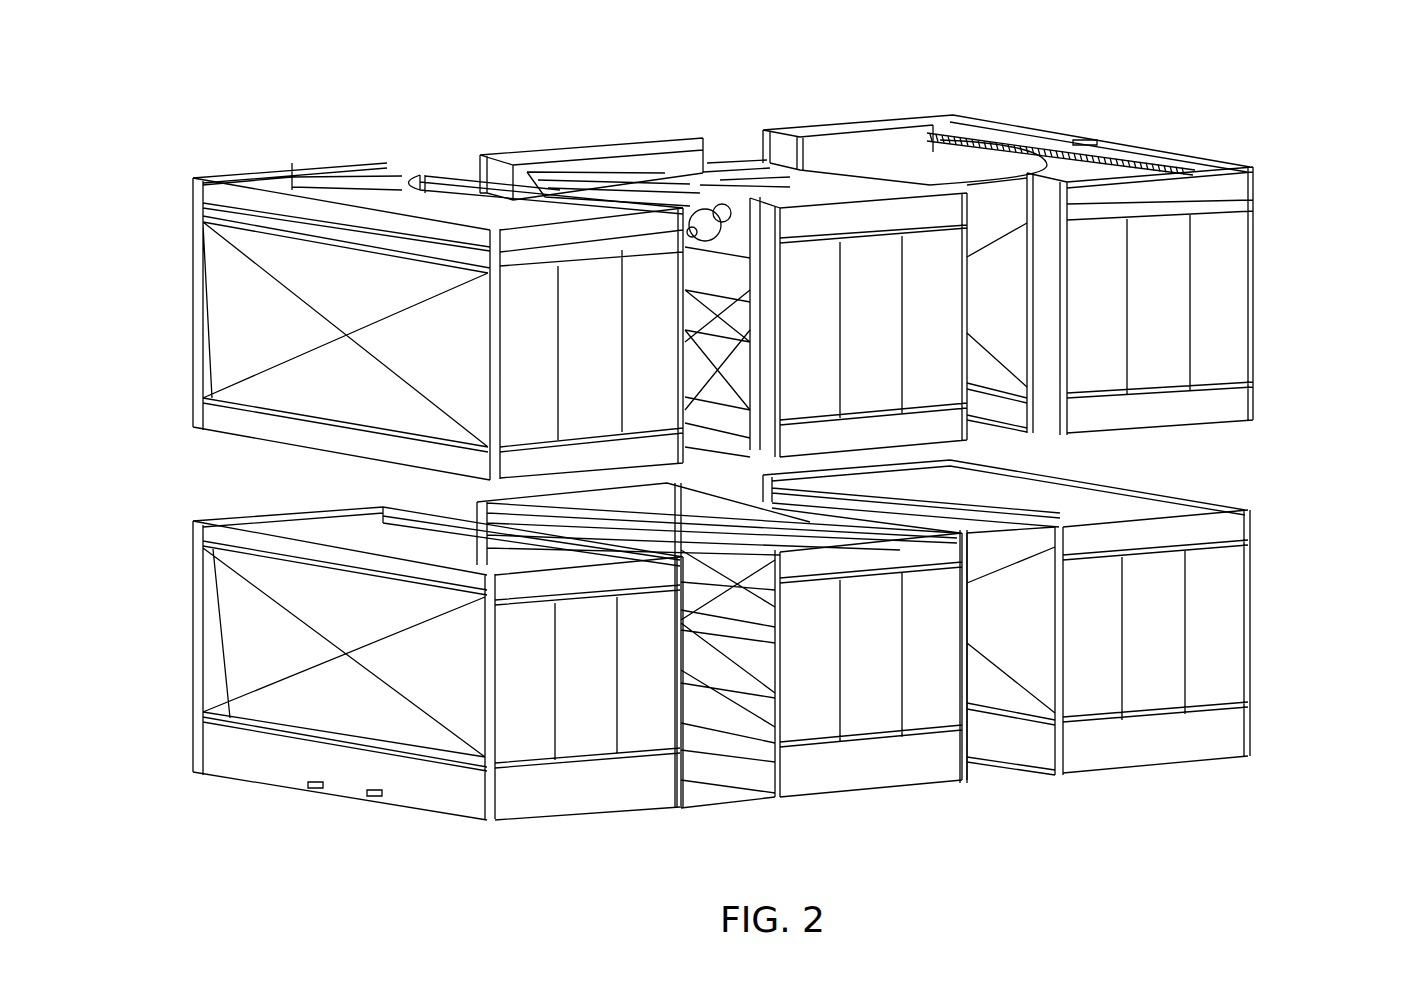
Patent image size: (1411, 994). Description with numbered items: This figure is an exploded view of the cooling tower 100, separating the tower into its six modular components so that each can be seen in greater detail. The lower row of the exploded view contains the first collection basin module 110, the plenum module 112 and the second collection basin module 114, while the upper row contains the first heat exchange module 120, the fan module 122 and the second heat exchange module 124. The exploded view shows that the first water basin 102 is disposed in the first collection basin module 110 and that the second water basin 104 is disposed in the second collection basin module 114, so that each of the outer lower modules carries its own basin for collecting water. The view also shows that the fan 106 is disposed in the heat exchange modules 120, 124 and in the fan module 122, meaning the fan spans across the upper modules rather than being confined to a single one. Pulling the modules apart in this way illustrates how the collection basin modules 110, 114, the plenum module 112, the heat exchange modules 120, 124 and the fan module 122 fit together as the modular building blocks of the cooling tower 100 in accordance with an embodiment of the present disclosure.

The cooling tower 100 is at (1193, 113).
The first water basin 102 is at (442, 803).
The second water basin 104 is at (1228, 735).
The fan 106 is at (722, 163).
The first collection basin module 110 is at (363, 684).
The plenum module 112 is at (872, 792).
The second collection basin module 114 is at (1078, 621).
The heat exchange module 120 is at (196, 284).
The fan module 122 is at (723, 243).
The heat exchange module 124 is at (1253, 283).